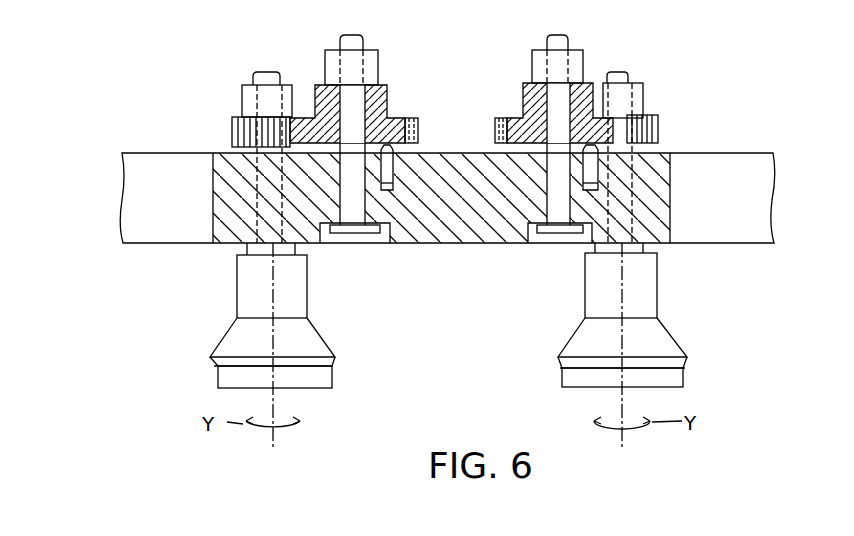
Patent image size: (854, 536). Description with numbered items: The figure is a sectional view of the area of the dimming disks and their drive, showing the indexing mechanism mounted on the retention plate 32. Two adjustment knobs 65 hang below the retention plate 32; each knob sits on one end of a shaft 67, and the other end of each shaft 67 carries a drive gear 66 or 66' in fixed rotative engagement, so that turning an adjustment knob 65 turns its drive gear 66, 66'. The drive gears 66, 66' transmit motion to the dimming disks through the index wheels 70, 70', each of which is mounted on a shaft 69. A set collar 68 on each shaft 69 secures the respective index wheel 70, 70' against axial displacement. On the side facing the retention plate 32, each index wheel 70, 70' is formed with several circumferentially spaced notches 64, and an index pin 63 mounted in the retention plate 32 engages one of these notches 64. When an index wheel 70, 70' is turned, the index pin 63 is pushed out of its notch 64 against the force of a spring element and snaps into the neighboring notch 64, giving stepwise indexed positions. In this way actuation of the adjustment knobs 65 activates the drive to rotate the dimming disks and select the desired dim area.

The retention plate 32 is at (162, 212).
The index pin 63 is at (386, 180).
The notches 64 is at (418, 130).
The adjustment knobs 65 is at (237, 343).
The drive gear 66 is at (675, 128).
The drive gear 66' is at (228, 130).
The shafts 67 is at (264, 72).
The set collar 68 is at (371, 60).
The shaft 69 is at (354, 208).
The index wheel 70 is at (539, 106).
The index wheel 70' is at (366, 106).